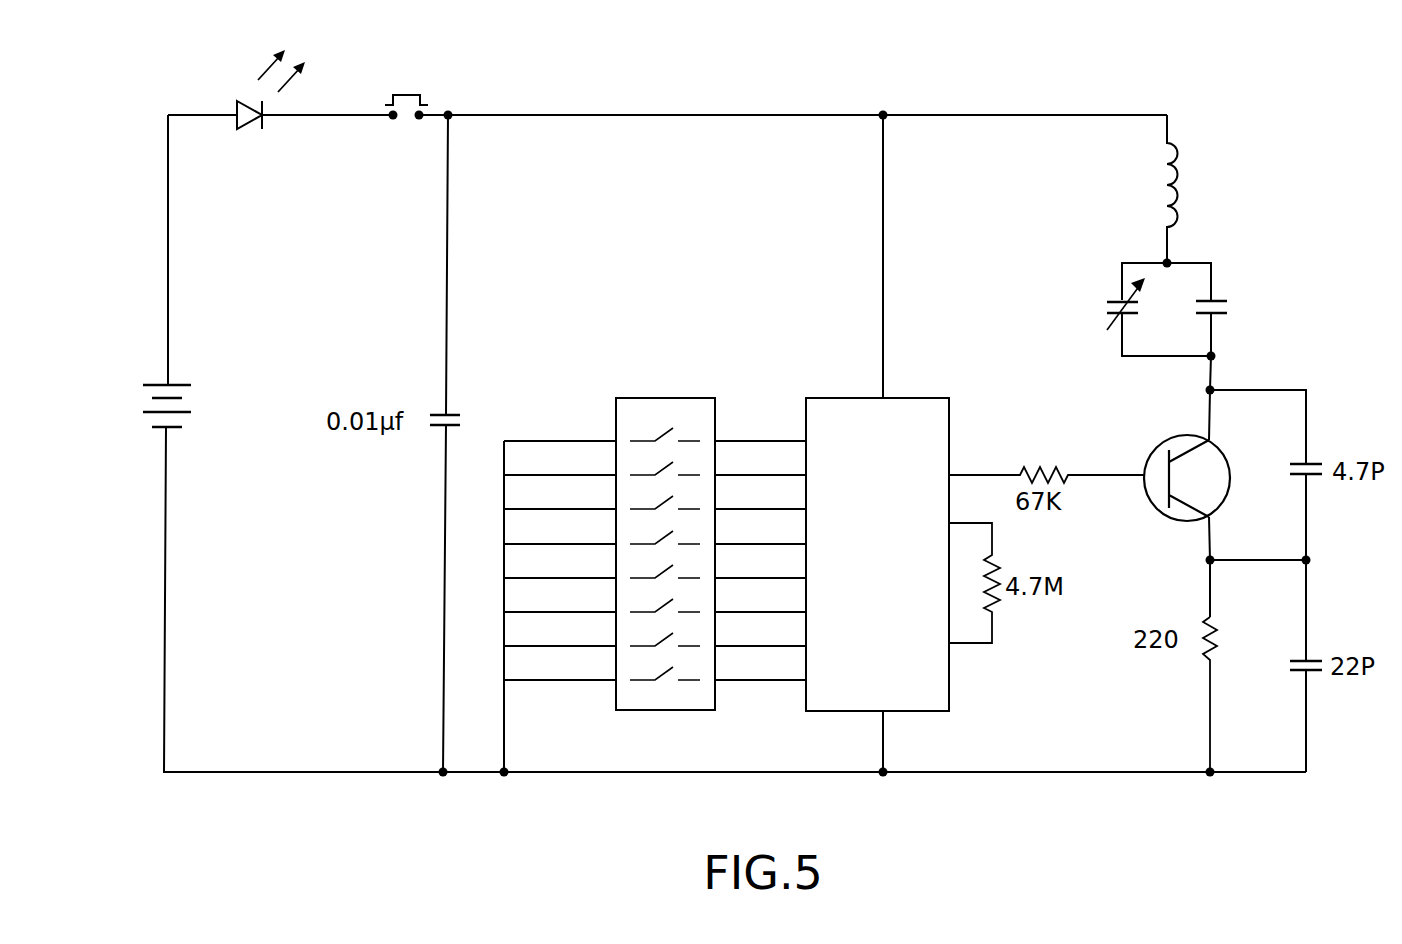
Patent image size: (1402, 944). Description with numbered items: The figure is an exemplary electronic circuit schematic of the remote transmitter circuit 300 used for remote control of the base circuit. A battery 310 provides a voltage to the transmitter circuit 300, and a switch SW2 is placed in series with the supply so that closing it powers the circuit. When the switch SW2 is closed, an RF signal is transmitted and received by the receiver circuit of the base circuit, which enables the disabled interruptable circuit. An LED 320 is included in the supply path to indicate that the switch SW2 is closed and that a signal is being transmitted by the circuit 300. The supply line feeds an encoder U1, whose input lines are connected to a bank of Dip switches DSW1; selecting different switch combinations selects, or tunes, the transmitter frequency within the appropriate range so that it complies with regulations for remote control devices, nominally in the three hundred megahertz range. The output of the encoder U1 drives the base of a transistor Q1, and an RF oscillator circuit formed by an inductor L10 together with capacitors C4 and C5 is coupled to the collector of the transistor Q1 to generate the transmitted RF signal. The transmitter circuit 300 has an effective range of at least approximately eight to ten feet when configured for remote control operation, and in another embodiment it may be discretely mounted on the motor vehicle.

The remote transmitter circuit 300 is at (967, 97).
The battery 310 is at (158, 385).
The LED 320 is at (246, 100).
The switch SW2 is at (411, 84).
The Dip switches DSW1 is at (655, 539).
The encoder U1 is at (877, 554).
The transistor Q10C 16744 Q1 is at (1124, 503).
The inductor L10 is at (1205, 189).
The capacitor C5 is at (1095, 304).
The capacitor C4 is at (1238, 307).